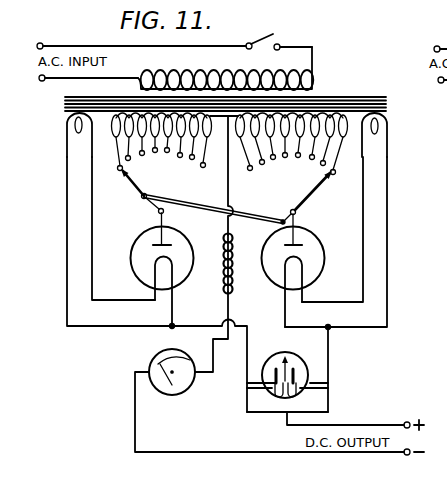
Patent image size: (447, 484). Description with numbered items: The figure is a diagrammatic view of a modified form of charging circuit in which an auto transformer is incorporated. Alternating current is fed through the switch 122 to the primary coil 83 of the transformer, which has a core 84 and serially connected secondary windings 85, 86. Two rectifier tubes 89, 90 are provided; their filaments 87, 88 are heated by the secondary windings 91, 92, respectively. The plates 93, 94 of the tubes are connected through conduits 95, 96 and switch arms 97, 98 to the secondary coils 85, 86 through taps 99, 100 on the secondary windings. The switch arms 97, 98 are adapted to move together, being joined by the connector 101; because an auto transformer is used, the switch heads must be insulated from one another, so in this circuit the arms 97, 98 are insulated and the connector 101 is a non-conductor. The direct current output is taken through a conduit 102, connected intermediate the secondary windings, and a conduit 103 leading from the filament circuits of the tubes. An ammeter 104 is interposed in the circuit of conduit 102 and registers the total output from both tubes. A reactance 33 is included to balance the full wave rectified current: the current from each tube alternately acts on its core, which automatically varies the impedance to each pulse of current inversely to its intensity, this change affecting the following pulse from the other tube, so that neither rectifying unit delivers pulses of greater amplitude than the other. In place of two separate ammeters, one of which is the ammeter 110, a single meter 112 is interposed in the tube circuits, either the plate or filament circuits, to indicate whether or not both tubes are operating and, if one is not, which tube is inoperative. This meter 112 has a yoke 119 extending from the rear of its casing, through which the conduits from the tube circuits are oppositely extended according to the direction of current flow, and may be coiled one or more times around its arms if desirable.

The switch 122 is at (264, 37).
The primary coil 83 is at (224, 68).
The core 84 is at (352, 98).
The secondary winding 91 is at (67, 130).
The secondary winding 92 is at (379, 132).
The connector 101 is at (193, 203).
The tap 100 is at (292, 147).
The tap 99 is at (162, 165).
The secondary winding 85 is at (112, 128).
The secondary winding 86 is at (347, 122).
The conduit 96 is at (281, 219).
The switch arm 97 is at (150, 203).
The conduit 95 is at (164, 213).
The rectifier tube 90 is at (280, 226).
The switch arm 98 is at (310, 190).
The rectifier tube 89 is at (186, 240).
The plate 93 is at (157, 242).
The plate 94 is at (300, 233).
The filament 87 is at (155, 272).
The filament 88 is at (302, 274).
The reactance 33 is at (232, 279).
The ammeter 104 is at (160, 391).
The meter 112 is at (306, 362).
The ammeter 110 is at (282, 377).
The yoke 119 is at (296, 368).
The conduit 103 is at (373, 422).
The conduit 102 is at (338, 453).